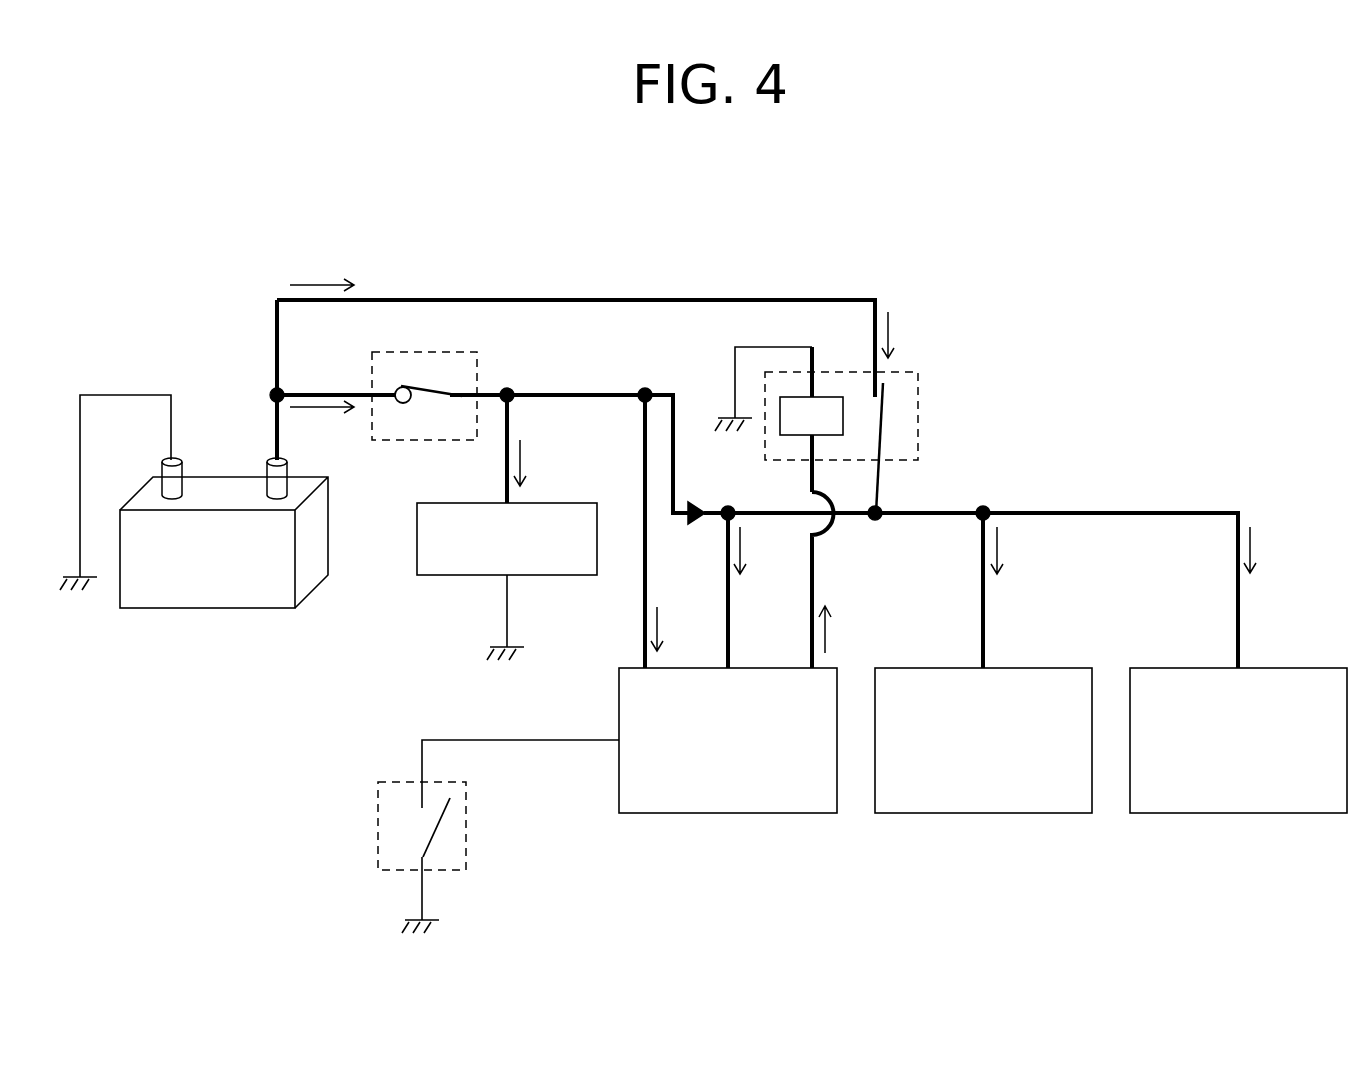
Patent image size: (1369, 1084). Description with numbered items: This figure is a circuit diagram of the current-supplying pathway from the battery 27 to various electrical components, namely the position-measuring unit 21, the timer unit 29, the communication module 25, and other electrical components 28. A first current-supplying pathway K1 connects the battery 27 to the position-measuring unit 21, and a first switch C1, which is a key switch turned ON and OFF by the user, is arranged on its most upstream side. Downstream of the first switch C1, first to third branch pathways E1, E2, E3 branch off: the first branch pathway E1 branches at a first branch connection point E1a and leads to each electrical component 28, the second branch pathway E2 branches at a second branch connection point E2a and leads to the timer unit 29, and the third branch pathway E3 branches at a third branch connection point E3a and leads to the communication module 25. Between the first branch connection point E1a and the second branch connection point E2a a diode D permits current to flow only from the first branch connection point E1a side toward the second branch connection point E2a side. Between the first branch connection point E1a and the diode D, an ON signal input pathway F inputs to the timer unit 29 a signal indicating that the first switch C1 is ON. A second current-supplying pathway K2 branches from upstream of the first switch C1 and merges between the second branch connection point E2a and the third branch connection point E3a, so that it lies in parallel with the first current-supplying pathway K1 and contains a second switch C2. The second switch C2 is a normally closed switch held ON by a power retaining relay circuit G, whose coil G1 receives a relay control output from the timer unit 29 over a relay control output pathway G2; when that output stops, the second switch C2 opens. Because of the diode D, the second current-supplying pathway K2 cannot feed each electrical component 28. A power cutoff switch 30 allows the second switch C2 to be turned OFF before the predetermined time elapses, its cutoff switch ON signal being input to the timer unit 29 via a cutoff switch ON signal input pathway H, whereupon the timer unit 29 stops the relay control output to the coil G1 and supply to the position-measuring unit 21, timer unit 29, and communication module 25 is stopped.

The battery 27 is at (200, 610).
The electrical component 28 is at (553, 575).
The timer unit 29 is at (715, 815).
The communication module 25 is at (970, 815).
The position-measuring unit 21 is at (1228, 815).
The power cutoff switch 30 is at (466, 850).
The first current-supplying pathway K1 is at (323, 393).
The second current-supplying pathway K2 is at (604, 300).
The first switch C1 is at (477, 372).
The second switch C2 is at (878, 423).
The power retaining relay circuit G is at (918, 390).
The coil G1 is at (800, 437).
The relay control output pathway G2 is at (813, 575).
The first branch pathway E1 is at (505, 472).
The first branch connection point E1a is at (512, 400).
The second branch pathway E2 is at (730, 587).
The second branch connection point E2a is at (729, 500).
The third branch pathway E3 is at (987, 613).
The third branch connection point E3a is at (990, 505).
The ON signal input pathway F is at (643, 478).
The diode D is at (700, 525).
The cutoff switch ON signal input pathway H is at (540, 742).